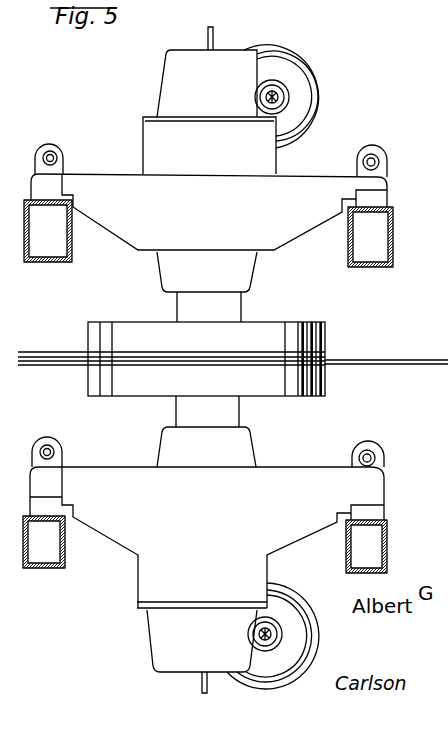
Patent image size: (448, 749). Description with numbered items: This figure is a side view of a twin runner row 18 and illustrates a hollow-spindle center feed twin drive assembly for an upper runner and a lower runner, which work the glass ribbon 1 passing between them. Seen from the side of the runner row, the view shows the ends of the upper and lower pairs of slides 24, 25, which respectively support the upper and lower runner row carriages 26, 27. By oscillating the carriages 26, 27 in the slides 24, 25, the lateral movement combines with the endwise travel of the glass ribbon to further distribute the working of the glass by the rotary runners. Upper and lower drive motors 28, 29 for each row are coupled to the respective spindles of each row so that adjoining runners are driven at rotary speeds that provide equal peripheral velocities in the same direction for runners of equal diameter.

The wire 1 is at (397, 361).
The row 18 is at (364, 328).
The upper pair of slides 24 is at (393, 240).
The lower pair of slides 25 is at (391, 543).
The upper runner row carriage 26 is at (321, 180).
The lower runner row carriage 27 is at (312, 478).
The upper drive motor 28 is at (321, 97).
The lower drive motor 29 is at (290, 684).